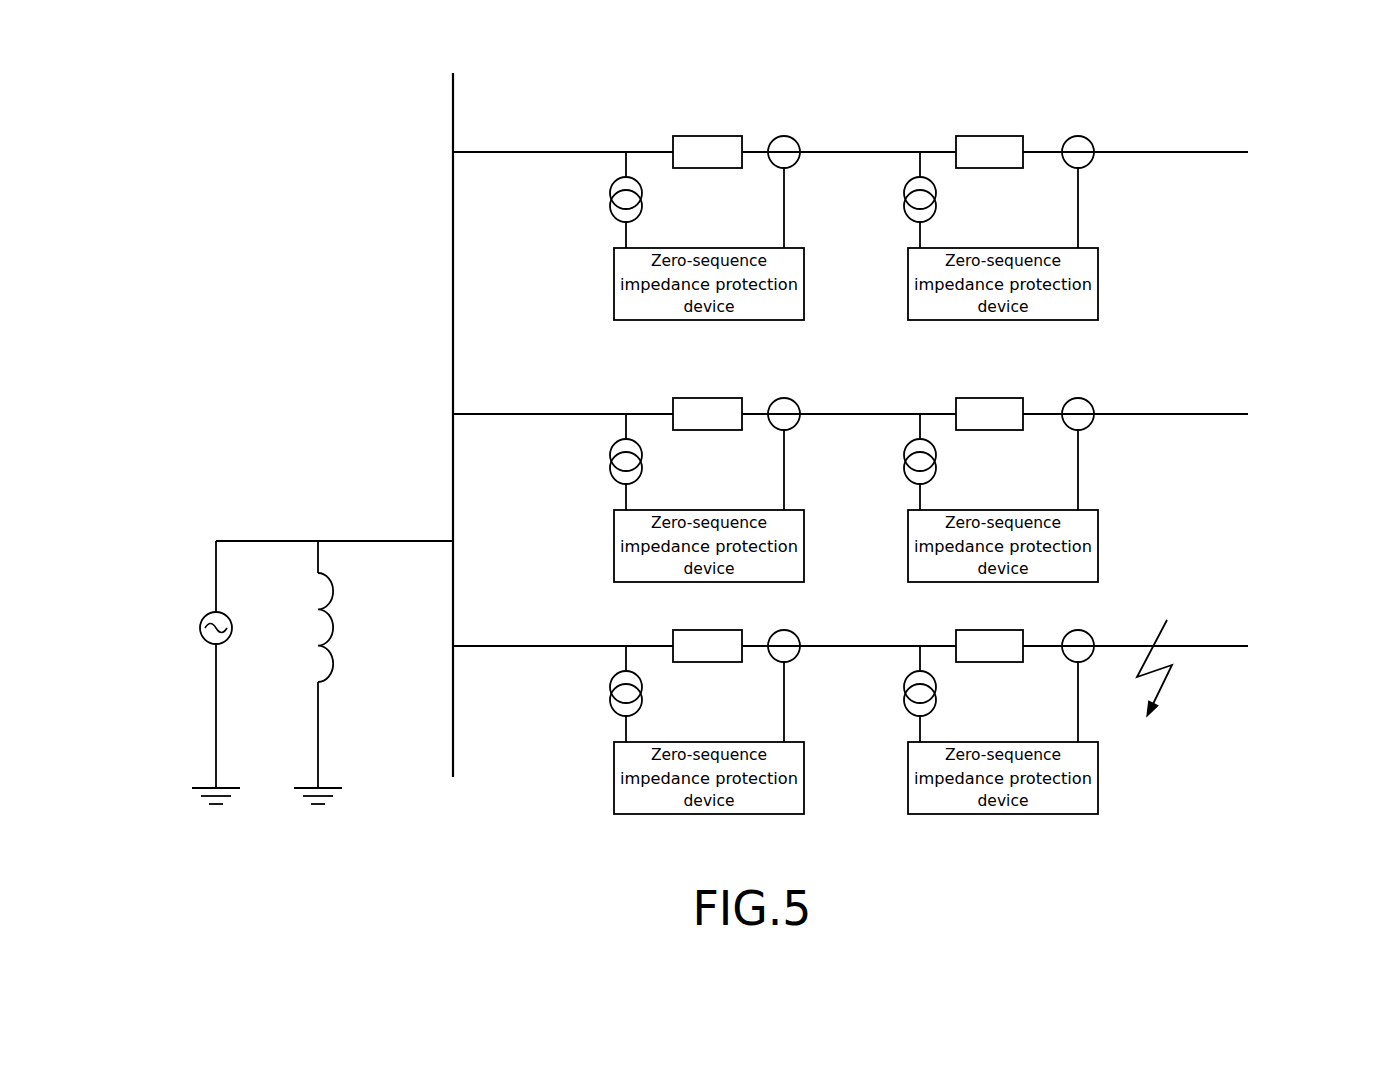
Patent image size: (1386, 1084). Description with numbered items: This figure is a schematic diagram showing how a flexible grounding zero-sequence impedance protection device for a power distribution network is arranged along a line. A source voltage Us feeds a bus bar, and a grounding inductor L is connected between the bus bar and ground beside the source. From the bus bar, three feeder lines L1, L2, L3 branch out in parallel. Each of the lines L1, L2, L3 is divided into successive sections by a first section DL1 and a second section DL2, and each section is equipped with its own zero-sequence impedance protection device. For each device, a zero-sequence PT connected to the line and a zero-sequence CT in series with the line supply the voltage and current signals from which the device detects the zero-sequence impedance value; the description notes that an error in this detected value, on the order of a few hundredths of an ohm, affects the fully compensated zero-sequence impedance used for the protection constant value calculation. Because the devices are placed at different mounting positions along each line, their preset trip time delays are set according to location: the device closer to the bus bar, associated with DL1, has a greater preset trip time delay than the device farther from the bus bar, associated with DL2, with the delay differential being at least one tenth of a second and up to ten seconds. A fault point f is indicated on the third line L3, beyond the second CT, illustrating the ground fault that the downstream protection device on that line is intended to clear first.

The first line section / breaker DL1 is at (707, 380).
The second line section / breaker DL2 is at (989, 380).
The zero-sequence CT is at (940, 424).
The zero-sequence PT is at (743, 447).
The feeder line L1 is at (891, 155).
The feeder line L2 is at (891, 417).
The feeder line L3 is at (891, 649).
The arc suppression coil inductor L is at (315, 672).
The source voltage Us is at (191, 672).
The fault point f is at (1155, 646).